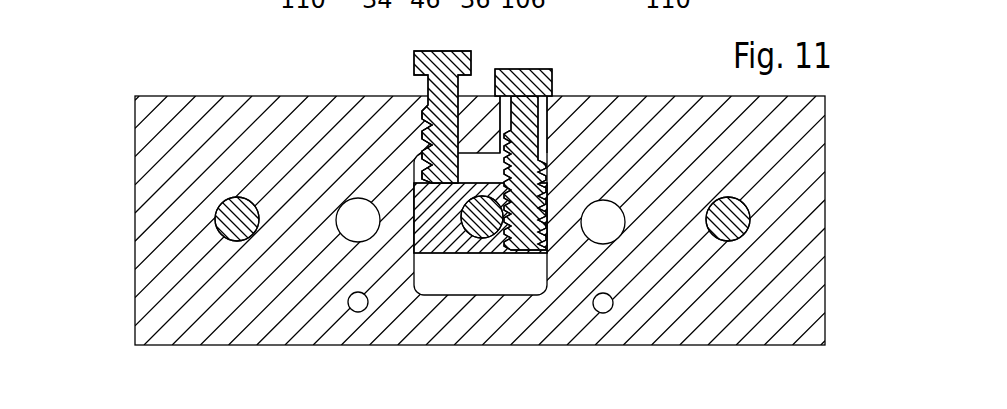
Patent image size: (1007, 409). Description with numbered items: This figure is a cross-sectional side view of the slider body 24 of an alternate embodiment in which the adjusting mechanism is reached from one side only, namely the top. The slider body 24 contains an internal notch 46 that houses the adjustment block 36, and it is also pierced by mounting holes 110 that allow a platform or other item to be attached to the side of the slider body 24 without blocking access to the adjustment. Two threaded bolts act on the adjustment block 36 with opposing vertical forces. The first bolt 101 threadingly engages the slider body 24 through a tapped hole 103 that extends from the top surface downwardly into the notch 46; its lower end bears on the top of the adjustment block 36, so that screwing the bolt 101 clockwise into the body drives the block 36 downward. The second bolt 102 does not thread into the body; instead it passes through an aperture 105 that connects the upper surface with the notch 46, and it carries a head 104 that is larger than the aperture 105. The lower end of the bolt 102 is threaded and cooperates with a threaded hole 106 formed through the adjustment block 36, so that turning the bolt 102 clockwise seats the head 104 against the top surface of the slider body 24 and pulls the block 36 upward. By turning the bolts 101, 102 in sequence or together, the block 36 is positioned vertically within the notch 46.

The slider body 24 is at (133, 63).
The mounting holes 110 is at (348, 232).
The notch 46 is at (418, 290).
The adjustment block 36 is at (465, 254).
The threaded hole 106 is at (545, 235).
The bolt 101 is at (440, 50).
The tapped hole 103 is at (424, 124).
The head 104 is at (523, 74).
The bolt 102 is at (553, 83).
The aperture 105 is at (547, 130).